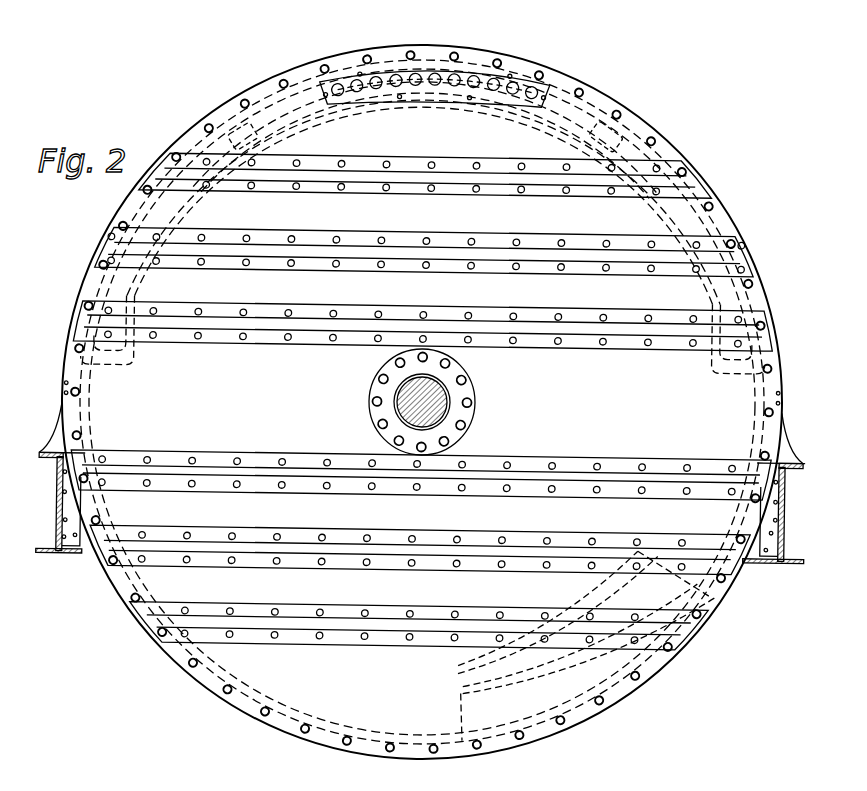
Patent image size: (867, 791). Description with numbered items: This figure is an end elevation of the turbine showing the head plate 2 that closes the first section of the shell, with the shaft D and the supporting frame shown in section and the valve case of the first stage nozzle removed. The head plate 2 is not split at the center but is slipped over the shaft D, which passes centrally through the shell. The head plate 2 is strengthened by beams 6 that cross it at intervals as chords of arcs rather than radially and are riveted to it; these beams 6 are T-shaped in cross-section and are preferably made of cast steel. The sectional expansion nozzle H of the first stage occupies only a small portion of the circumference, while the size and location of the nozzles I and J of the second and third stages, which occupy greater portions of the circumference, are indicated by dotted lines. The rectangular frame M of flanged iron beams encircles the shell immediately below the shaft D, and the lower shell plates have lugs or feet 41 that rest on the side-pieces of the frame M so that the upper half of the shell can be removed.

The head plate 2 is at (422, 402).
The strengthening beams 6 is at (286, 322).
The shaft D is at (400, 394).
The sectional expansion nozzle of the first stage H is at (457, 78).
The sectional expansion nozzle of the second stage I is at (589, 99).
The sectional expansion nozzle of the third stage J is at (698, 233).
The lugs or feet 41 is at (63, 405).
The rectangular frame M is at (786, 514).